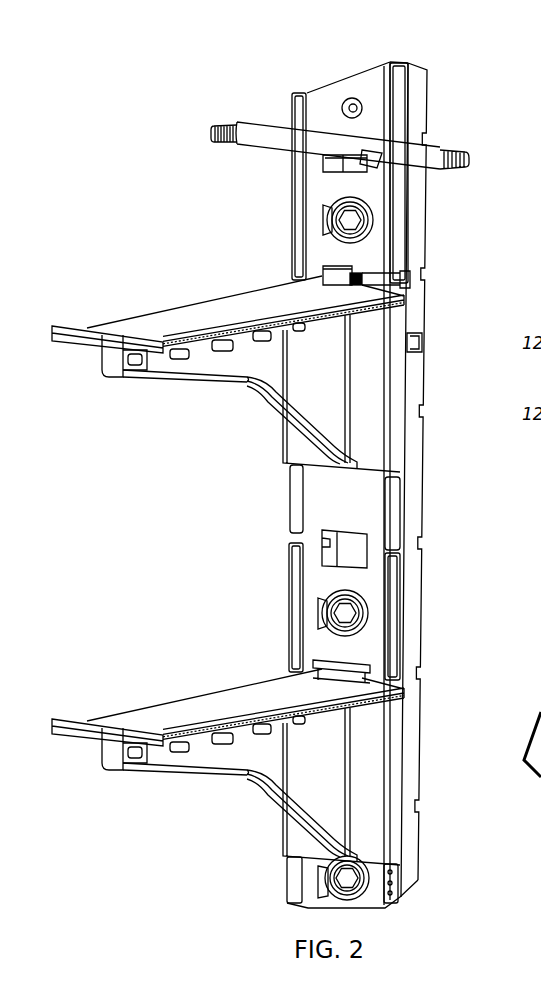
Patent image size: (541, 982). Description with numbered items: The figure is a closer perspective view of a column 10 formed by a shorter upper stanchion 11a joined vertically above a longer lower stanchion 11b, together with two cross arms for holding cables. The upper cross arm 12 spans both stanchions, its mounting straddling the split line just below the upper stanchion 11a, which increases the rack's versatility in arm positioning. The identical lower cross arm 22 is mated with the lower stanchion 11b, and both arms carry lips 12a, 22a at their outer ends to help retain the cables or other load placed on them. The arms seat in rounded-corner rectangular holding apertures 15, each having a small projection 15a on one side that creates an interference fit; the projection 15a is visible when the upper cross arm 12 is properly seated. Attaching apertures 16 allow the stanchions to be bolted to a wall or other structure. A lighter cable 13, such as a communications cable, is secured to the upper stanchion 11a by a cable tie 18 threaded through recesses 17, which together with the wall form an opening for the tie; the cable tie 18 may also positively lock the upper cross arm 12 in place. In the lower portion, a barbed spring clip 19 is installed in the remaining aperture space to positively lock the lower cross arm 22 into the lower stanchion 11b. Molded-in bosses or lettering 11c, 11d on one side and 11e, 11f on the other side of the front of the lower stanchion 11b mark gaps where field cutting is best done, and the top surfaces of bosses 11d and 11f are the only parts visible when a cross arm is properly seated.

The column 10 is at (438, 437).
The upper stanchion 11a is at (423, 318).
The lower stanchion 11b is at (422, 502).
The molded-in boss or lettering 11c is at (402, 613).
The molded-in boss or lettering 11d is at (402, 593).
The molded-in boss or lettering 11e is at (296, 597).
The molded-in boss or lettering 11f is at (293, 576).
The upper cross arm 12 is at (177, 303).
The lip 12a is at (63, 340).
The cable 13 is at (432, 167).
The holding aperture 15 is at (332, 263).
The projection 15a is at (292, 282).
The attaching aperture 16 is at (325, 207).
The recess 17 is at (422, 139).
The cable tie 18 is at (403, 106).
The barbed spring clip 19 is at (370, 667).
The lower cross arm 22 is at (173, 697).
The lip 22a is at (63, 733).